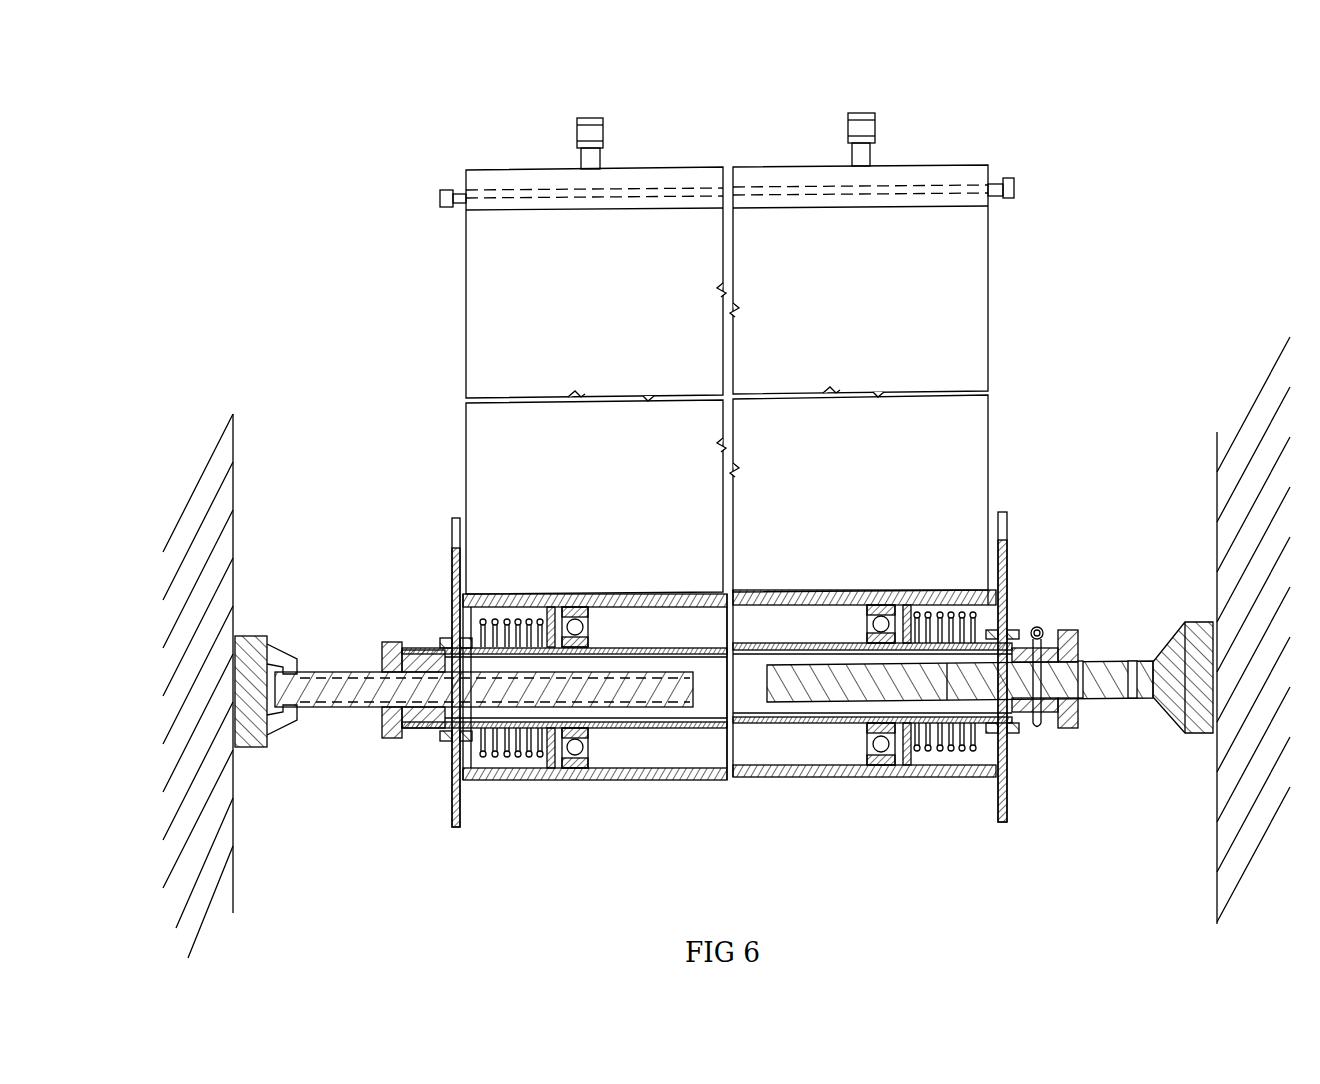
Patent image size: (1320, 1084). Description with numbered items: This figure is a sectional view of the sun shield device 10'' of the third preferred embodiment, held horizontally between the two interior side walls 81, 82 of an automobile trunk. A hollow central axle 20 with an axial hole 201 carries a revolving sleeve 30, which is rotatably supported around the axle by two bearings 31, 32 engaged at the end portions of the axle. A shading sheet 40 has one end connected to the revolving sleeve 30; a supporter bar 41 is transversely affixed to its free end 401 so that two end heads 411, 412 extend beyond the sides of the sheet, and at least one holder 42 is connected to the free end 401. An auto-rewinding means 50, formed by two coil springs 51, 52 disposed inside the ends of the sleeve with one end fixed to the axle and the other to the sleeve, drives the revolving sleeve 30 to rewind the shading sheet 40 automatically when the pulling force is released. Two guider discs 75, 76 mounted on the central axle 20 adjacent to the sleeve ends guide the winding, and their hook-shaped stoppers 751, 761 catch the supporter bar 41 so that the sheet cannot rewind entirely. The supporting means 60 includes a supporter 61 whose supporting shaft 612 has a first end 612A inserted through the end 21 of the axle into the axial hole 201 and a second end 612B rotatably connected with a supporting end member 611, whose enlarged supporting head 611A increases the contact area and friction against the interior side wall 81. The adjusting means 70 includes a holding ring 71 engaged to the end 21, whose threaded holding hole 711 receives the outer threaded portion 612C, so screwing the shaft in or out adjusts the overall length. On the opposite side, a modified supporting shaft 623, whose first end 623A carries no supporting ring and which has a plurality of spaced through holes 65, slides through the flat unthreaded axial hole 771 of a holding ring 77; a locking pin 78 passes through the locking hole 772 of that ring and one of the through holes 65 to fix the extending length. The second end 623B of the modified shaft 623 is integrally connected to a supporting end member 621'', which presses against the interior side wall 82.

The sun shield device 10'' is at (780, 868).
The central axle 20 is at (605, 781).
The axial hole 201 is at (712, 700).
The end of the central axle 21 is at (411, 658).
The revolving sleeve 30 is at (600, 781).
The bearing 31 is at (581, 771).
The bearing 32 is at (897, 768).
The shading sheet 40 is at (956, 318).
The free end of the shading sheet 401 is at (948, 170).
The supporter bar 41 is at (408, 187).
The end head of the supporter bar 411 is at (457, 214).
The end head of the supporter bar 412 is at (1012, 167).
The holder 42 is at (598, 119).
The auto-rewinding means 50 is at (525, 773).
The coil spring 51 is at (512, 776).
The coil spring 52 is at (950, 590).
The supporting means 60 is at (413, 787).
The supporter 61 is at (354, 746).
The supporting end member 611 is at (273, 744).
The enlarged supporting head 611A is at (248, 636).
The supporting shaft 612 is at (362, 714).
The first end of the supporting shaft 612A is at (668, 692).
The second end of the supporting shaft 612B is at (290, 664).
The outer threaded portion 612C is at (374, 716).
The modified supporting shaft 623 is at (897, 704).
The first end of the modified supporting shaft 623A is at (795, 680).
The second end of the modified supporting shaft 623B is at (1158, 660).
The supporting end member 621'' is at (1156, 715).
The through holes 65 is at (1050, 672).
The adjusting means 70 is at (370, 634).
The holding ring 71 is at (446, 744).
The holding hole 711 is at (393, 643).
The guider disc 75 is at (456, 824).
The hook-shaped stopper 751 is at (455, 531).
The guider disc 76 is at (1008, 811).
The hook-shaped stopper 761 is at (1002, 526).
The holding ring 77 is at (1070, 726).
The flat axial hole 771 is at (1085, 646).
The locking hole 772 is at (1068, 628).
The locking pin 78 is at (1037, 626).
The interior side wall 81 is at (233, 864).
The interior side wall 82 is at (1220, 849).